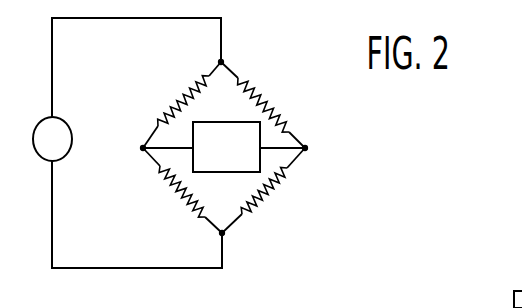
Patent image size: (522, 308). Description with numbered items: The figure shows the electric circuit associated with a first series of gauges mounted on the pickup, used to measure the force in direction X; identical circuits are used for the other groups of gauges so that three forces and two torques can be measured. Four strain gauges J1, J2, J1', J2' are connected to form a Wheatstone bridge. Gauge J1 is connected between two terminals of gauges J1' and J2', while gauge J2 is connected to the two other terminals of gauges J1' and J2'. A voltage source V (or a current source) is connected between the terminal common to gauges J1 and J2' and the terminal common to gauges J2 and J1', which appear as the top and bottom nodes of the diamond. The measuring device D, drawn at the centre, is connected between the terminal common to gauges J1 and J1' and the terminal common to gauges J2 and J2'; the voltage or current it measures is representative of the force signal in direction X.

The voltage source V is at (74, 133).
The gauge J1 is at (178, 105).
The gauge J2' is at (268, 105).
The gauge J1' is at (174, 190).
The gauge J2 is at (264, 190).
The measuring device D is at (226, 147).